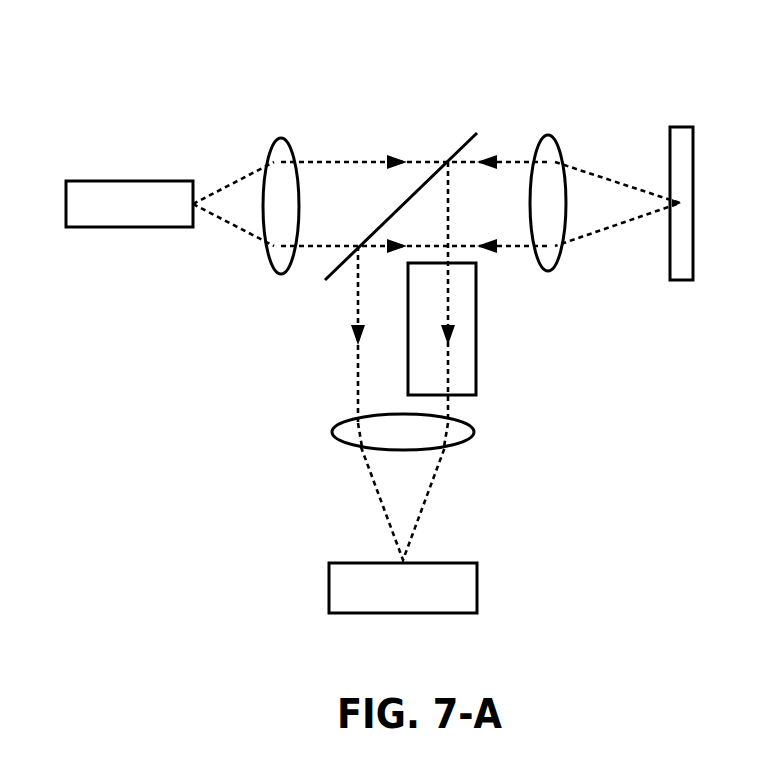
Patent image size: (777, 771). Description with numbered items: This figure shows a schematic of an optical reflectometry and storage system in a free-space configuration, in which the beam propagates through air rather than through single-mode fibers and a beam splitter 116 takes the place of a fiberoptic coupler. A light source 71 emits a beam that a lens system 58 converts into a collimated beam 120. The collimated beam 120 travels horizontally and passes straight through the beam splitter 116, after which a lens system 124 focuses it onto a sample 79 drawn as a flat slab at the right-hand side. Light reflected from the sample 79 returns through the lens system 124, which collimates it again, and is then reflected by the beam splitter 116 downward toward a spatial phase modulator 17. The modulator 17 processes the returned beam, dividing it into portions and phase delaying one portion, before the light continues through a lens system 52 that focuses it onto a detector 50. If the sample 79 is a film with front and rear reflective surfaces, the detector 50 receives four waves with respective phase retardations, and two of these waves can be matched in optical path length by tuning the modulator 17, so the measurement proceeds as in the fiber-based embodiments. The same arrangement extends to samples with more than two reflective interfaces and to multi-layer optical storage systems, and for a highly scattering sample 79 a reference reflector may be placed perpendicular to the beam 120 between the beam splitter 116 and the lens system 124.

The light source 71 is at (108, 165).
The lens system 58 is at (273, 120).
The collimated beam 120 is at (331, 185).
The beam splitter 116 is at (463, 121).
The lens system 124 is at (555, 120).
The sample 79 is at (677, 113).
The spatial phase modulator 17 is at (495, 323).
The lens system 52 is at (495, 433).
The detector 50 is at (315, 592).